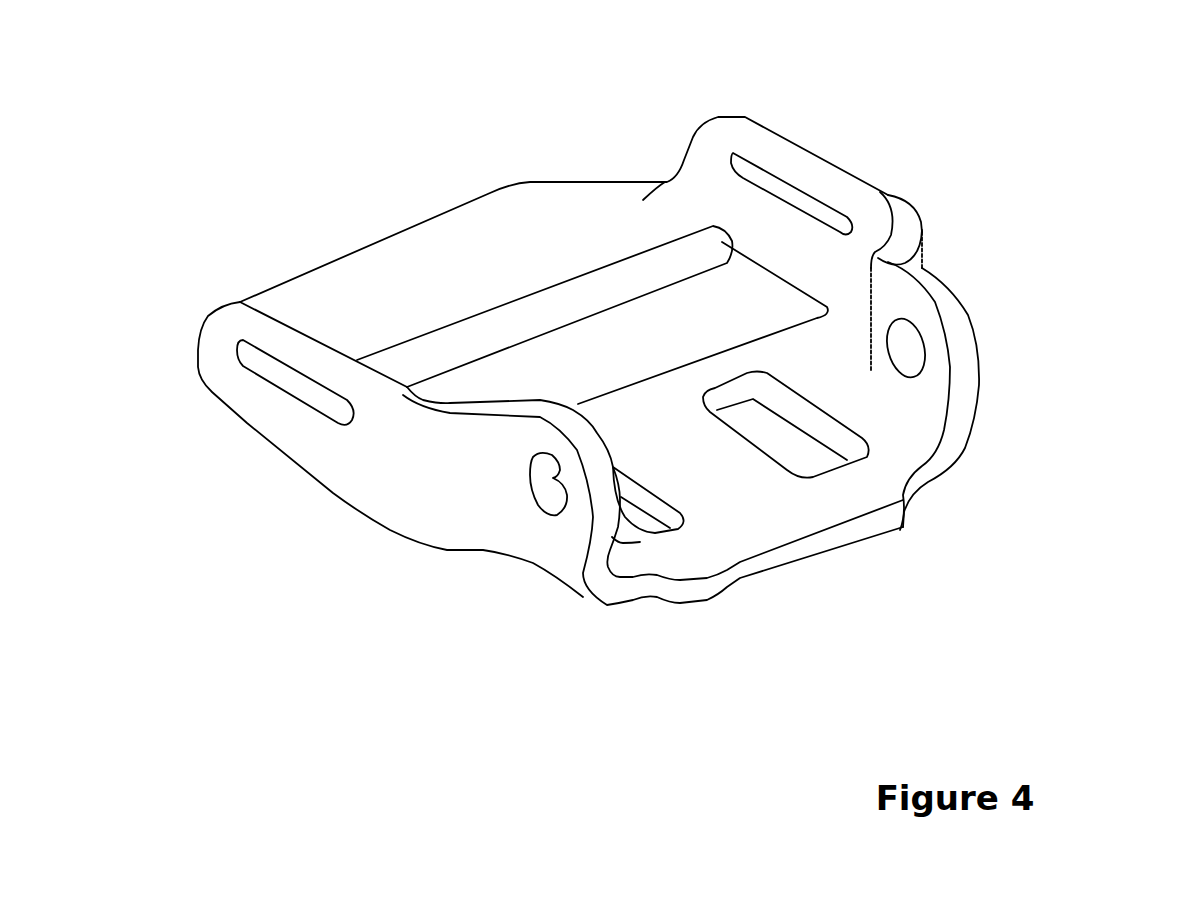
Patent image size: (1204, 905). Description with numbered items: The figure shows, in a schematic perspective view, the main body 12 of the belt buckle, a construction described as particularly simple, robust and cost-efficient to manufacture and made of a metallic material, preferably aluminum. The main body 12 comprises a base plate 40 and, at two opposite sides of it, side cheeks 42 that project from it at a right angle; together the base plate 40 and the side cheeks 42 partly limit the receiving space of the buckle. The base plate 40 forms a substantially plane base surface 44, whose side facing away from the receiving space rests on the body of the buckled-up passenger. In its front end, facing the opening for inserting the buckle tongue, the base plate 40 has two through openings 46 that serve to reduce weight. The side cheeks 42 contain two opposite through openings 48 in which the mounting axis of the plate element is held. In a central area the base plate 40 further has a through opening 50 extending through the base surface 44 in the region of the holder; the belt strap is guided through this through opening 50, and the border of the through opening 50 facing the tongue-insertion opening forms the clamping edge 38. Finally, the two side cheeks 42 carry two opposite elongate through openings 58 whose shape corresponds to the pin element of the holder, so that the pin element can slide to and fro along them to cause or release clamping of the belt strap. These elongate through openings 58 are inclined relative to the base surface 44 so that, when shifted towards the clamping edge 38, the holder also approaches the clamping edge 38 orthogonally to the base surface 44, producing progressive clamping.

The main body 12 is at (1056, 135).
The clamping edge 38 is at (572, 290).
The base plate 40 is at (537, 212).
The side cheeks 42 is at (883, 200).
The base surface 44 is at (407, 262).
The through openings 46 is at (798, 448).
The through openings 48 is at (921, 341).
The through opening 50 is at (727, 291).
The elongate through openings 58 is at (810, 194).